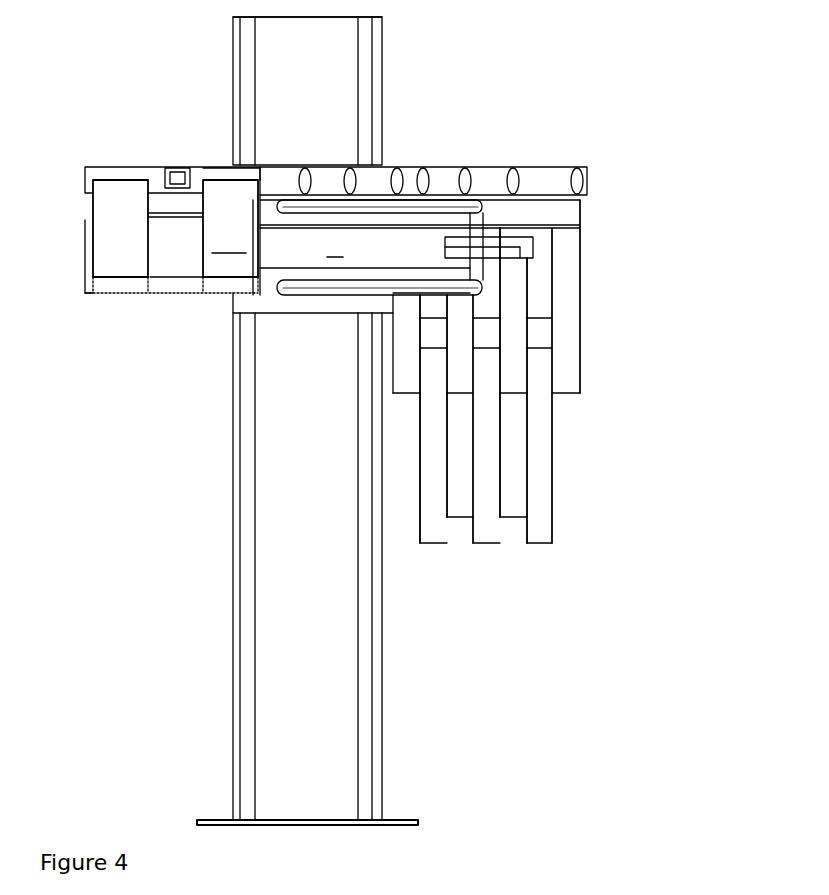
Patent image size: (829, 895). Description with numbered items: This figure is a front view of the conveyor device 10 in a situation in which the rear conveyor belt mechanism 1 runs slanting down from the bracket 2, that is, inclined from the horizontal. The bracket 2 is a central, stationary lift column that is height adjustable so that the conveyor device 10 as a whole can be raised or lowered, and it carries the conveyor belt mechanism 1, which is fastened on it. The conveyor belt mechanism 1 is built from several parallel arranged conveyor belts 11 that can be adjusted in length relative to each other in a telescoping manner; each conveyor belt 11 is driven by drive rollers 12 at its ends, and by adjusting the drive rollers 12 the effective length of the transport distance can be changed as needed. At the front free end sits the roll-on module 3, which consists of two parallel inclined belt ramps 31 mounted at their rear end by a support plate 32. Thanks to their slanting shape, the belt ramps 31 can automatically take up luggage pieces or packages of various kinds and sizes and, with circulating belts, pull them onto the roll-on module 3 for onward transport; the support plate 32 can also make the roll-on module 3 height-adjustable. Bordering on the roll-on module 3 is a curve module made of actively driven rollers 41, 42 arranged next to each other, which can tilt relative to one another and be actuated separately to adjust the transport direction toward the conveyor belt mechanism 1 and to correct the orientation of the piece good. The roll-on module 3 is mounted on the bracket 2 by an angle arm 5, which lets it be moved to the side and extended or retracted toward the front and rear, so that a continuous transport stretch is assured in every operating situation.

The conveyor device 10 is at (603, 88).
The conveyor belt mechanism 1 is at (453, 165).
The conveyor belts 11 is at (540, 478).
The drive rollers 12 is at (578, 362).
The bracket 2 is at (270, 525).
The roll-on module 3 is at (156, 245).
The inclined belt ramps 31 is at (105, 265).
The support plate 32 is at (174, 278).
The roller 41 is at (105, 170).
The roller 42 is at (228, 168).
The angle arm 5 is at (405, 247).